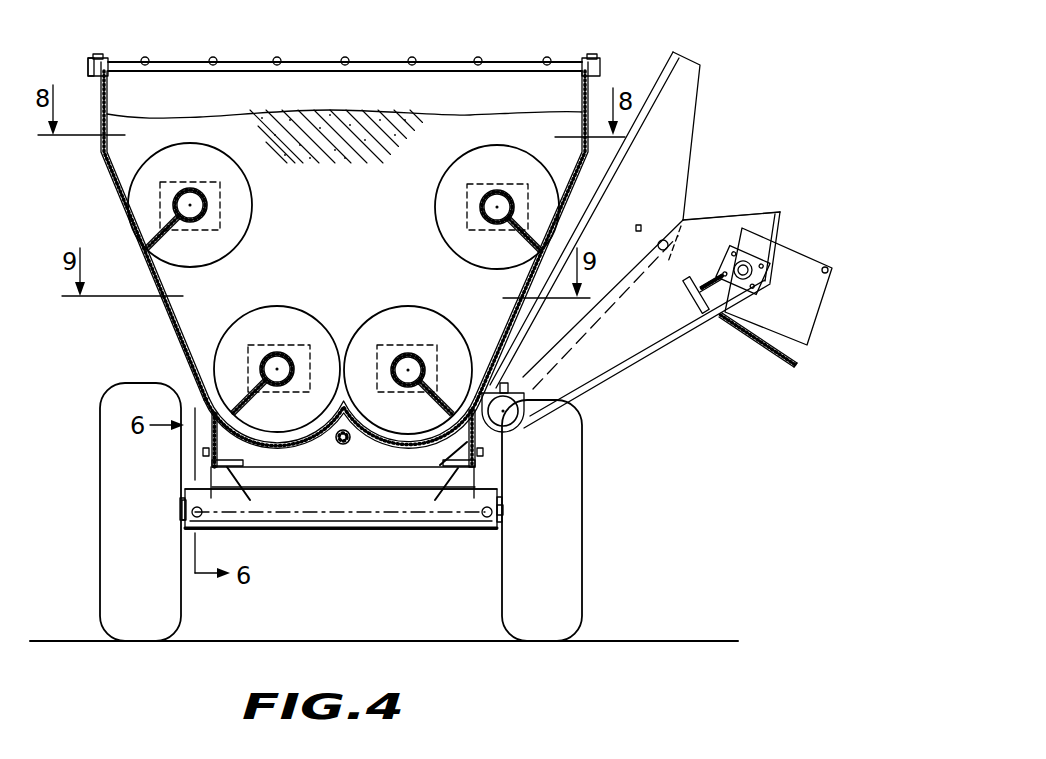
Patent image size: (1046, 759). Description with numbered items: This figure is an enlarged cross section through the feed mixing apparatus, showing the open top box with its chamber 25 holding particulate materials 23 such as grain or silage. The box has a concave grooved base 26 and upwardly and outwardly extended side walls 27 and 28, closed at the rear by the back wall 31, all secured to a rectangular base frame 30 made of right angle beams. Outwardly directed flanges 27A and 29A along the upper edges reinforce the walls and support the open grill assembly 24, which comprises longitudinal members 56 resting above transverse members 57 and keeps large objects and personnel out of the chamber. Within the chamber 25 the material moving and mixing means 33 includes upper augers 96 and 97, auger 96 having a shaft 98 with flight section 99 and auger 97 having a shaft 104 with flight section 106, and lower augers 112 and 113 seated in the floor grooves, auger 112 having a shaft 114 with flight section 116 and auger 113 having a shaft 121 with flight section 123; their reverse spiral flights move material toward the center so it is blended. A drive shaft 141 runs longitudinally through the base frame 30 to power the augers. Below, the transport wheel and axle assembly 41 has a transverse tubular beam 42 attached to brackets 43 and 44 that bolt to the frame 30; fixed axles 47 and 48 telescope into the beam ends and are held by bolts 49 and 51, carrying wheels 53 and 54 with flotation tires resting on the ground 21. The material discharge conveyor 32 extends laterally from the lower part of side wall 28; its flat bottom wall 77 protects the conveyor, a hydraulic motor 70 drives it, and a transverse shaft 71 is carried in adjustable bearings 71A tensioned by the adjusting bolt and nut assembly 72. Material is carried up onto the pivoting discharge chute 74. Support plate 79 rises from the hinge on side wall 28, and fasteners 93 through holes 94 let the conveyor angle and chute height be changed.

The ground surface 21 is at (665, 640).
The particulate materials 23 is at (318, 122).
The open grill assembly 24 is at (217, 55).
The chamber 25 is at (457, 93).
The concave grooved base 26 is at (385, 448).
The side wall 27 is at (197, 274).
The outwardly directed flange 27A is at (88, 67).
The side wall 28 is at (518, 320).
The outwardly directed flange 29A is at (600, 73).
The base frame 30 is at (442, 468).
The back wall 31 is at (132, 83).
The material discharge conveyor 32 is at (733, 155).
The material moving and mixing means 33 is at (211, 336).
The transport wheel and axle assembly 41 is at (390, 543).
The transverse tubular beam 42 is at (263, 517).
The bracket 43 is at (243, 483).
The bracket 44 is at (477, 483).
The first fixed axle 47 is at (182, 518).
The second fixed axle 48 is at (500, 517).
The horizontal bolt 49 is at (191, 508).
The bolt 51 is at (487, 518).
The wheel 53 is at (117, 567).
The wheel 54 is at (567, 570).
The longitudinal members 56 is at (481, 60).
The transverse members 57 is at (455, 72).
The hydraulic motor 70 is at (512, 413).
The transverse shaft 71 is at (737, 250).
The adjustable bearings 71A is at (780, 247).
The adjusting bolt and nut assembly 72 is at (711, 292).
The discharge chute 74 is at (785, 360).
The flat bottom wall 77 is at (628, 378).
The support plate 79 is at (683, 82).
The fasteners 93 is at (657, 245).
The additional holes 94 is at (638, 225).
The upper longitudinal auger 96 is at (430, 188).
The upper longitudinal auger 97 is at (253, 190).
The longitudinal shaft 98 is at (487, 190).
The flight section 99 is at (520, 160).
The longitudinal shaft 104 is at (207, 210).
The flight section 106 is at (200, 140).
The lower auger 112 is at (292, 293).
The lower auger 113 is at (377, 298).
The longitudinal shaft 114 is at (277, 350).
The flight section 116 is at (238, 320).
The longitudinal shaft 121 is at (407, 350).
The second flight section 123 is at (355, 330).
The drive shaft 141 is at (346, 447).